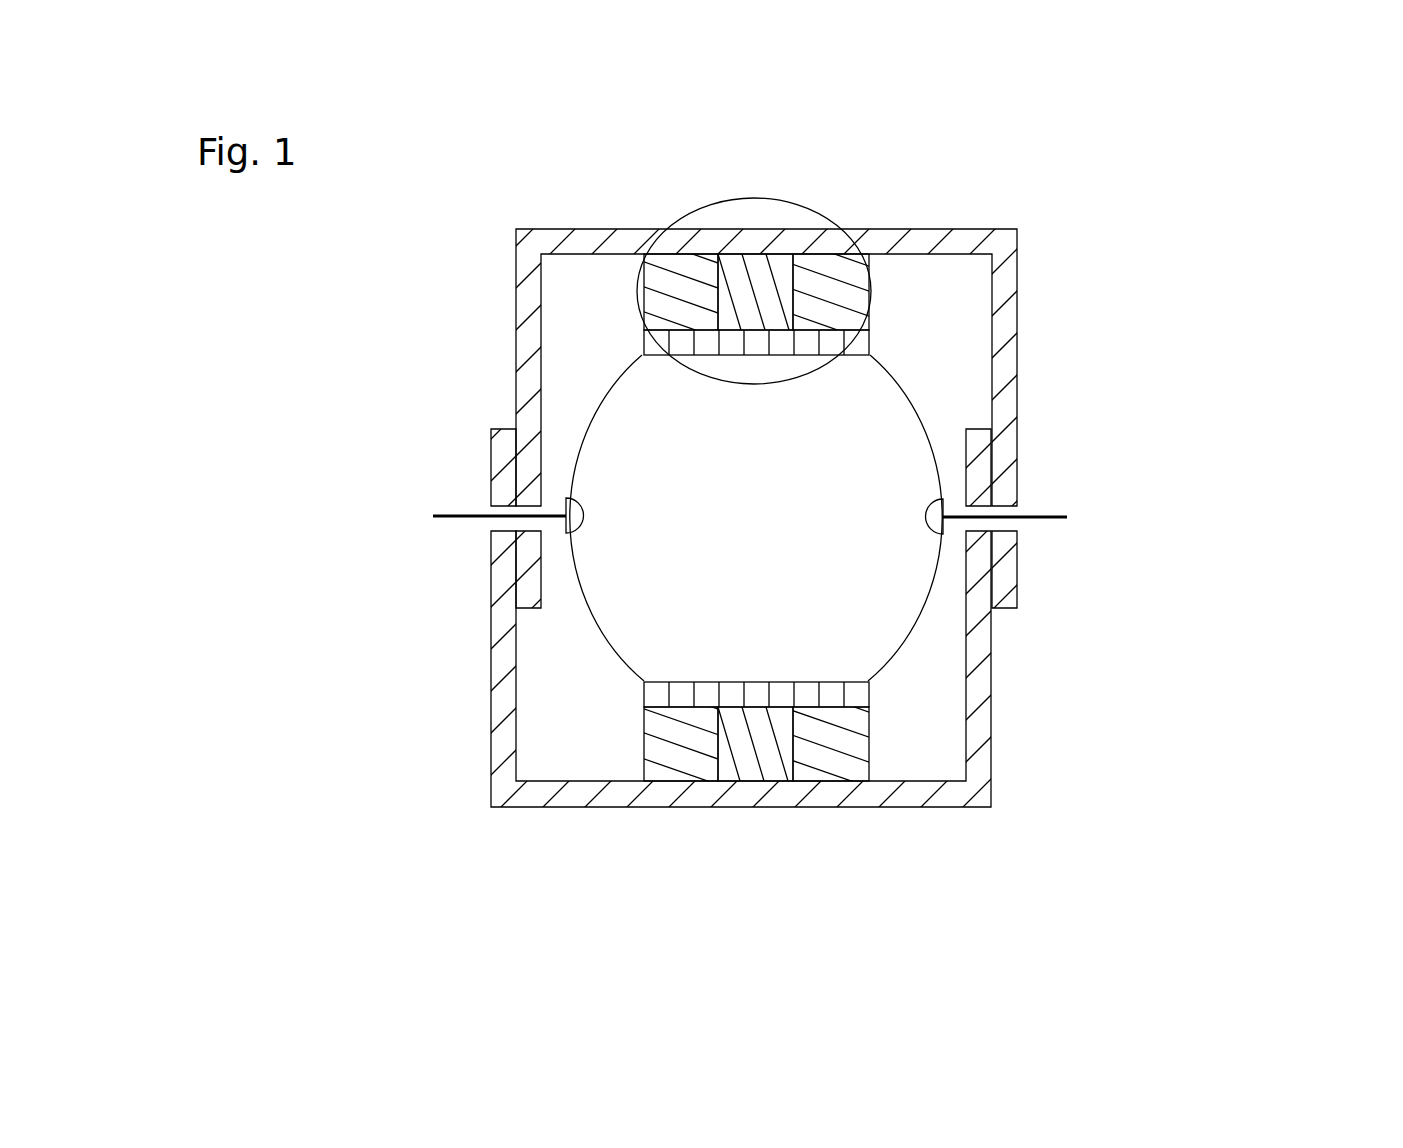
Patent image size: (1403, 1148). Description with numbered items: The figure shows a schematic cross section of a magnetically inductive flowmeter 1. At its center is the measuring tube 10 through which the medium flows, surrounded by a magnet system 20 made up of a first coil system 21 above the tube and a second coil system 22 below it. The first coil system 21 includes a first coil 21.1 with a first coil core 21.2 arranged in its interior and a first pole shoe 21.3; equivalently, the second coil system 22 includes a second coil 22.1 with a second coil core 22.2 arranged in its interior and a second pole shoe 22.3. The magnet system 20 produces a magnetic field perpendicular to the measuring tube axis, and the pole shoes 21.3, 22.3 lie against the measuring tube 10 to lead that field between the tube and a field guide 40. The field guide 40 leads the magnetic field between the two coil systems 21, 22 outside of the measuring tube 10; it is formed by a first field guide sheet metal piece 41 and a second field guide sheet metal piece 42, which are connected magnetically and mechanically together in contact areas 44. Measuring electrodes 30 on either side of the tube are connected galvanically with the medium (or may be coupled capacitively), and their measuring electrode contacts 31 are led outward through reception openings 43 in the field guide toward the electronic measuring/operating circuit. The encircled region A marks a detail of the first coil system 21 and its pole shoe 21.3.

The magnetically inductive flowmeter 1 is at (448, 665).
The measuring tube 10 is at (917, 632).
The magnet system 20 is at (617, 280).
The first coil system 21 is at (658, 203).
The first coil 21.1 is at (843, 265).
The first coil core 21.2 is at (765, 280).
The first pole shoe 21.3 is at (855, 342).
The second coil system 22 is at (908, 825).
The second coil 22.1 is at (842, 758).
The second coil core 22.2 is at (768, 760).
The second pole shoe 22.3 is at (855, 693).
The measuring electrodes 30 is at (565, 525).
The measuring electrode contacts 31 is at (460, 512).
The field guide 40 is at (620, 827).
The first field guide sheet metal piece 41 is at (1013, 228).
The second field guide sheet metal piece 42 is at (977, 807).
The reception openings 43 is at (490, 503).
The contact areas 44 is at (463, 595).
The detail region A is at (810, 378).